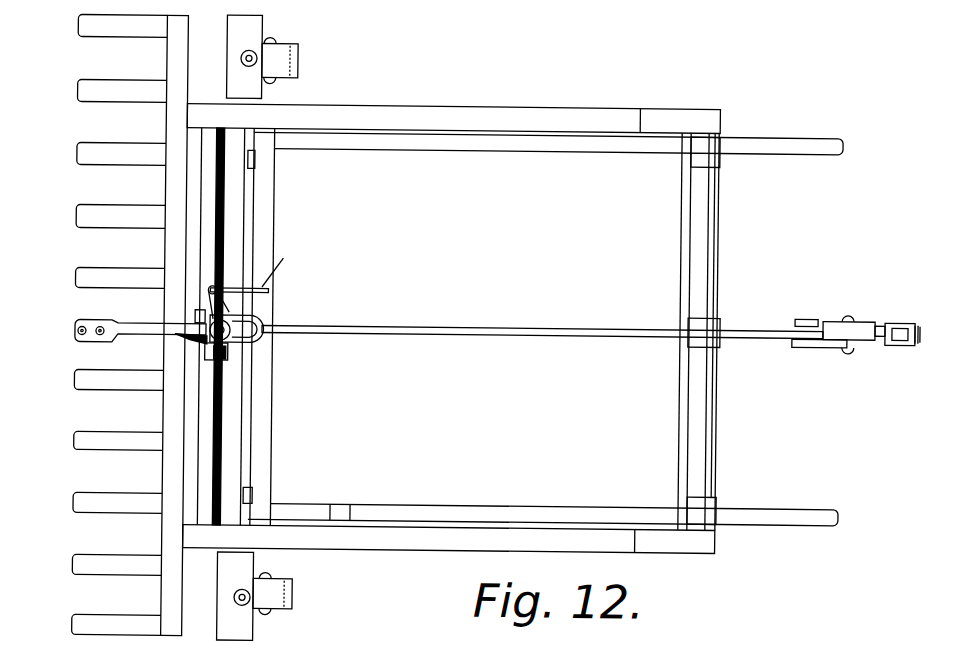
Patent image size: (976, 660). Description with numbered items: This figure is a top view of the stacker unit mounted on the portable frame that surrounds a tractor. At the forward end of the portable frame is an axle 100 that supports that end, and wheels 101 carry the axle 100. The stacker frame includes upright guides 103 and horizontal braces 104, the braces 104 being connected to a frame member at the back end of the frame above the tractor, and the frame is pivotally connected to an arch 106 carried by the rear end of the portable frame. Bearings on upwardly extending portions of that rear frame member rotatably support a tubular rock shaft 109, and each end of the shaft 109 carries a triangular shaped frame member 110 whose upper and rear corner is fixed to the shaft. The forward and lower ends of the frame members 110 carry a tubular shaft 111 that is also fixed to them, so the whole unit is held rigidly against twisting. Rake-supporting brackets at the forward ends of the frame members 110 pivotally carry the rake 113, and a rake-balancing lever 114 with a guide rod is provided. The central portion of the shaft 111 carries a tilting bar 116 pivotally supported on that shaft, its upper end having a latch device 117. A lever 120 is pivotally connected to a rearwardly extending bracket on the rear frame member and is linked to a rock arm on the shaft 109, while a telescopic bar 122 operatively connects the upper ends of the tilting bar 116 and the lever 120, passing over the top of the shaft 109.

The axle 100 is at (241, 186).
The wheels 101 is at (297, 64).
The upright guides 103 is at (315, 507).
The horizontal braces 104 is at (541, 146).
The arch 106 is at (717, 402).
The tubular rock shaft 109 is at (712, 252).
The triangular shaped frame member 110 is at (530, 116).
The tubular shaft 111 is at (218, 414).
The rake 113 is at (94, 507).
The rake-balancing lever 114 is at (127, 331).
The tilting bar 116 is at (284, 306).
The latch device 117 is at (175, 344).
The lever 120 is at (907, 330).
The telescopic bar 122 is at (416, 332).